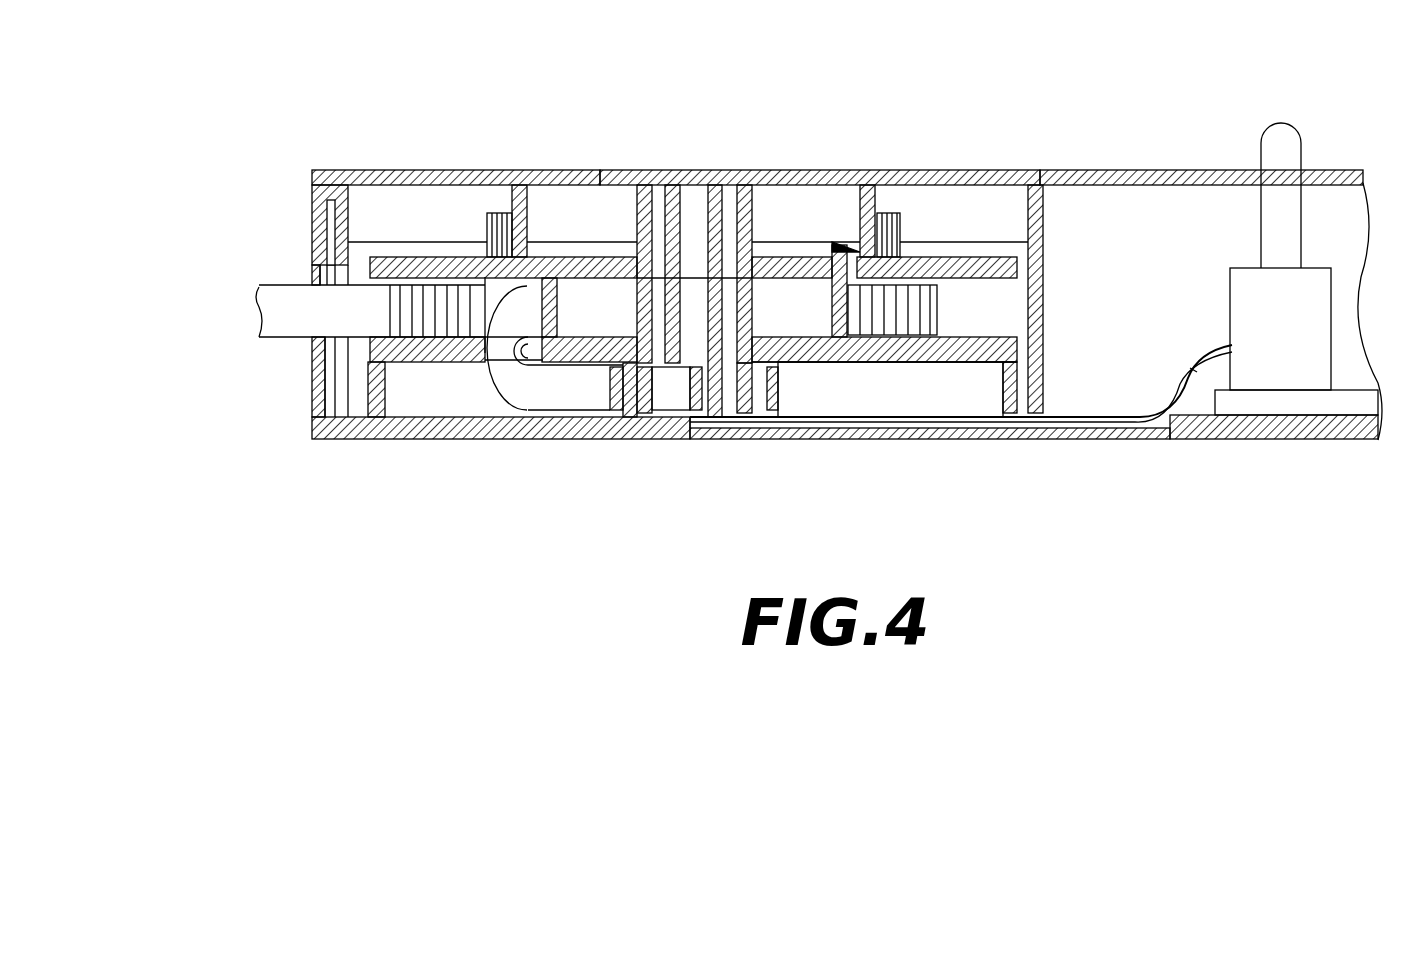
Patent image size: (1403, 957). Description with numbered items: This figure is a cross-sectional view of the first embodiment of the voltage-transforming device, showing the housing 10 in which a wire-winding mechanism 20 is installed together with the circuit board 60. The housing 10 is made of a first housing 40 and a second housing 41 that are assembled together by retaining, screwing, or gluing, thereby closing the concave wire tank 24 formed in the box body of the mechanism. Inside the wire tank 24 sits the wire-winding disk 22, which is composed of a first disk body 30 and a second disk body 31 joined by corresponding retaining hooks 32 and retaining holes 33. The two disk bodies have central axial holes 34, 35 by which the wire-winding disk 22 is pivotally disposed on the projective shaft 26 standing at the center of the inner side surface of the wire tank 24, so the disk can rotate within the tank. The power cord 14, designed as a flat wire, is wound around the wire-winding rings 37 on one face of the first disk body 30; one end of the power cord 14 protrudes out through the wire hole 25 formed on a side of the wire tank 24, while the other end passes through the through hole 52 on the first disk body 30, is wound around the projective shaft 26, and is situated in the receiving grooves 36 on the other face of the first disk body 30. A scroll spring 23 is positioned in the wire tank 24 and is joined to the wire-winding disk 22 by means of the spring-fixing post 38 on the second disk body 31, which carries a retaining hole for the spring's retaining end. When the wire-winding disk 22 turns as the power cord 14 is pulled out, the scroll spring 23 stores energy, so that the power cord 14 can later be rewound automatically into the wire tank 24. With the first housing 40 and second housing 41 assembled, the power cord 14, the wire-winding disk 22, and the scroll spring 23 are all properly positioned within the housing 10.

The housing 10 is at (805, 160).
The power cord 14 is at (288, 310).
The wire-winding mechanism 20 is at (541, 219).
The wire-winding disk 22 is at (934, 239).
The scroll spring 23 is at (482, 172).
The wire tank 24 is at (997, 303).
The wire hole 25 is at (312, 340).
The projective shaft 26 is at (677, 217).
The first disk body 30 is at (421, 362).
The second disk body 31 is at (437, 257).
The retaining hook 32 is at (838, 243).
The retaining hole 33 is at (878, 247).
The central axial hole 34 is at (728, 390).
The central axial hole 35 is at (728, 217).
The receiving groove 36 is at (883, 387).
The wire-winding ring 37 is at (823, 340).
The spring-fixing post 38 is at (498, 235).
The first housing 40 is at (1243, 440).
The second housing 41 is at (1160, 168).
The through hole 52 is at (527, 352).
The circuit board 60 is at (1348, 403).